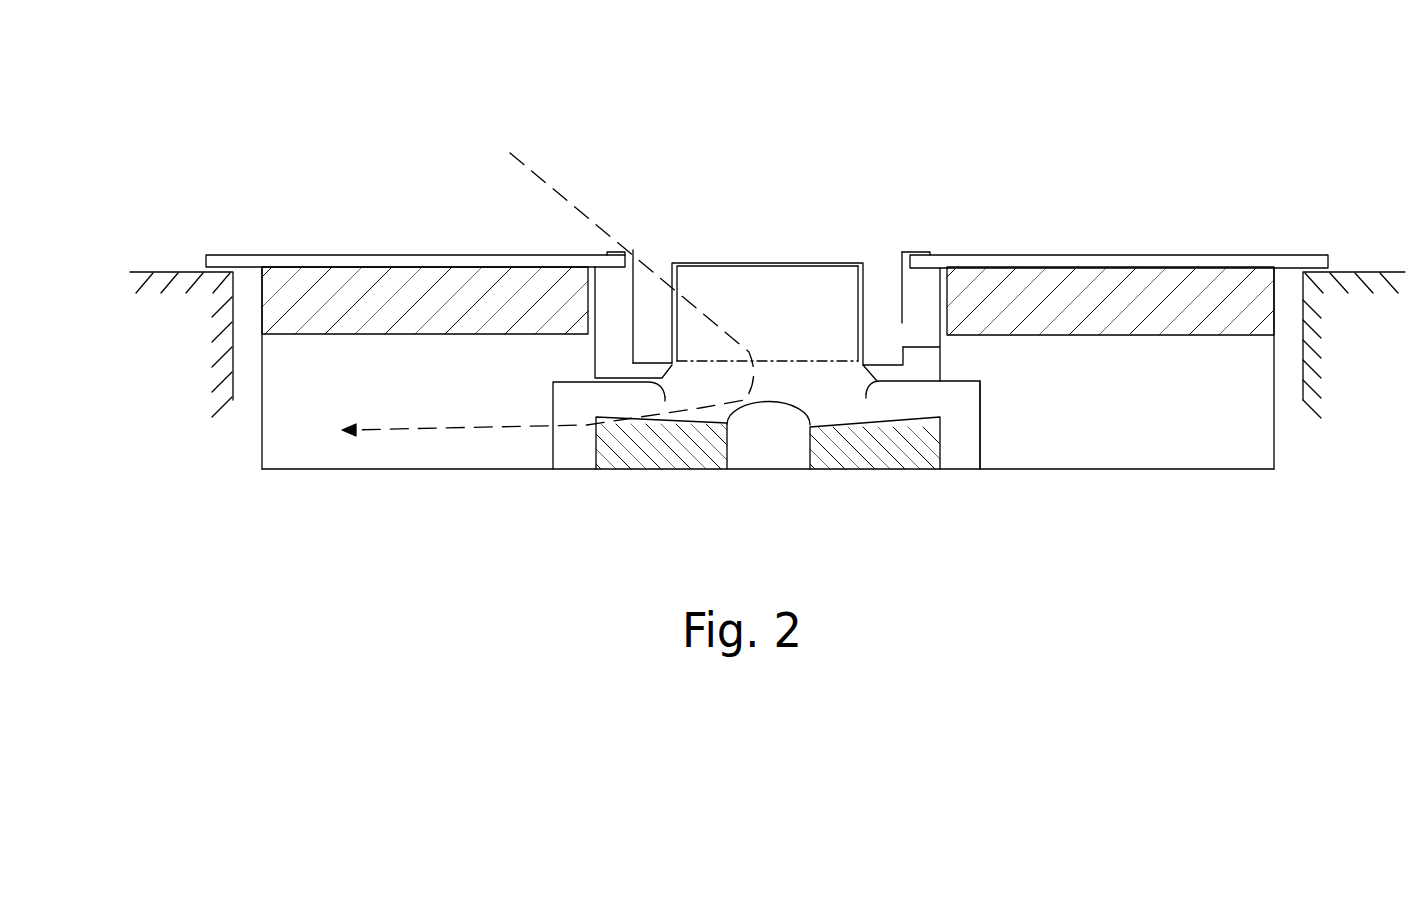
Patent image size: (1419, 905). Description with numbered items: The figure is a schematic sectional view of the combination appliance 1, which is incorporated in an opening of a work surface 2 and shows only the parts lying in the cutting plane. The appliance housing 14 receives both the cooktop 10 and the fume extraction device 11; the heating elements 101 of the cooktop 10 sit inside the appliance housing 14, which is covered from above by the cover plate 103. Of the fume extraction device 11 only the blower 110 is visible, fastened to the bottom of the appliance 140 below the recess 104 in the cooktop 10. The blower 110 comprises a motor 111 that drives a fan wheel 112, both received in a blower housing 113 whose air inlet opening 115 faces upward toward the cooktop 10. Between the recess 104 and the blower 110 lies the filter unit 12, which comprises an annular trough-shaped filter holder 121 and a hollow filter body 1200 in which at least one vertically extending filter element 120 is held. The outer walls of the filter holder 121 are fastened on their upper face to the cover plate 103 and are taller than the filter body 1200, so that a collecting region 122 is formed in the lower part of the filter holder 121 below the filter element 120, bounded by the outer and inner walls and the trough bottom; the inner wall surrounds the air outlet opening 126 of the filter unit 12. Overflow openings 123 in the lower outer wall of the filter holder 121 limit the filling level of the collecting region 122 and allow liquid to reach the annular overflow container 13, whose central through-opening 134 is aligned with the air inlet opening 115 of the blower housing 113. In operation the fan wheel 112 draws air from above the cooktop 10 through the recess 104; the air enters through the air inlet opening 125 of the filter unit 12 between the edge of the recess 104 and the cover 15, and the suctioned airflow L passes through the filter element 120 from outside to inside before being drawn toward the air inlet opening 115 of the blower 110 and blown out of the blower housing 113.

The combination appliance 1 is at (1115, 117).
The work surface 2 is at (1345, 325).
The cooktop 10 is at (1165, 190).
The heating elements 101 is at (1195, 308).
The cover plate 103 is at (425, 265).
The recess 104 is at (643, 255).
The fume extraction device 11 is at (916, 493).
The blower 110 is at (1011, 524).
The motor 111 is at (777, 430).
The fan wheel 112 is at (887, 435).
The blower housing 113 is at (982, 428).
The air inlet opening 115 is at (700, 385).
The filter unit 12 is at (843, 158).
The filter element 120 is at (872, 288).
The filter body 1200 is at (855, 252).
The filter holder 121 is at (913, 285).
The collecting region 122 is at (893, 348).
The overflow openings 123 is at (630, 333).
The air inlet opening of the filter unit 125 is at (650, 249).
The air outlet opening 126 is at (858, 358).
The overflow container 13 is at (597, 337).
The central through-opening 134 is at (790, 357).
The appliance housing 14 is at (259, 433).
The bottom of the appliance 140 is at (307, 470).
The cover 15 is at (790, 265).
The airflow L is at (388, 430).